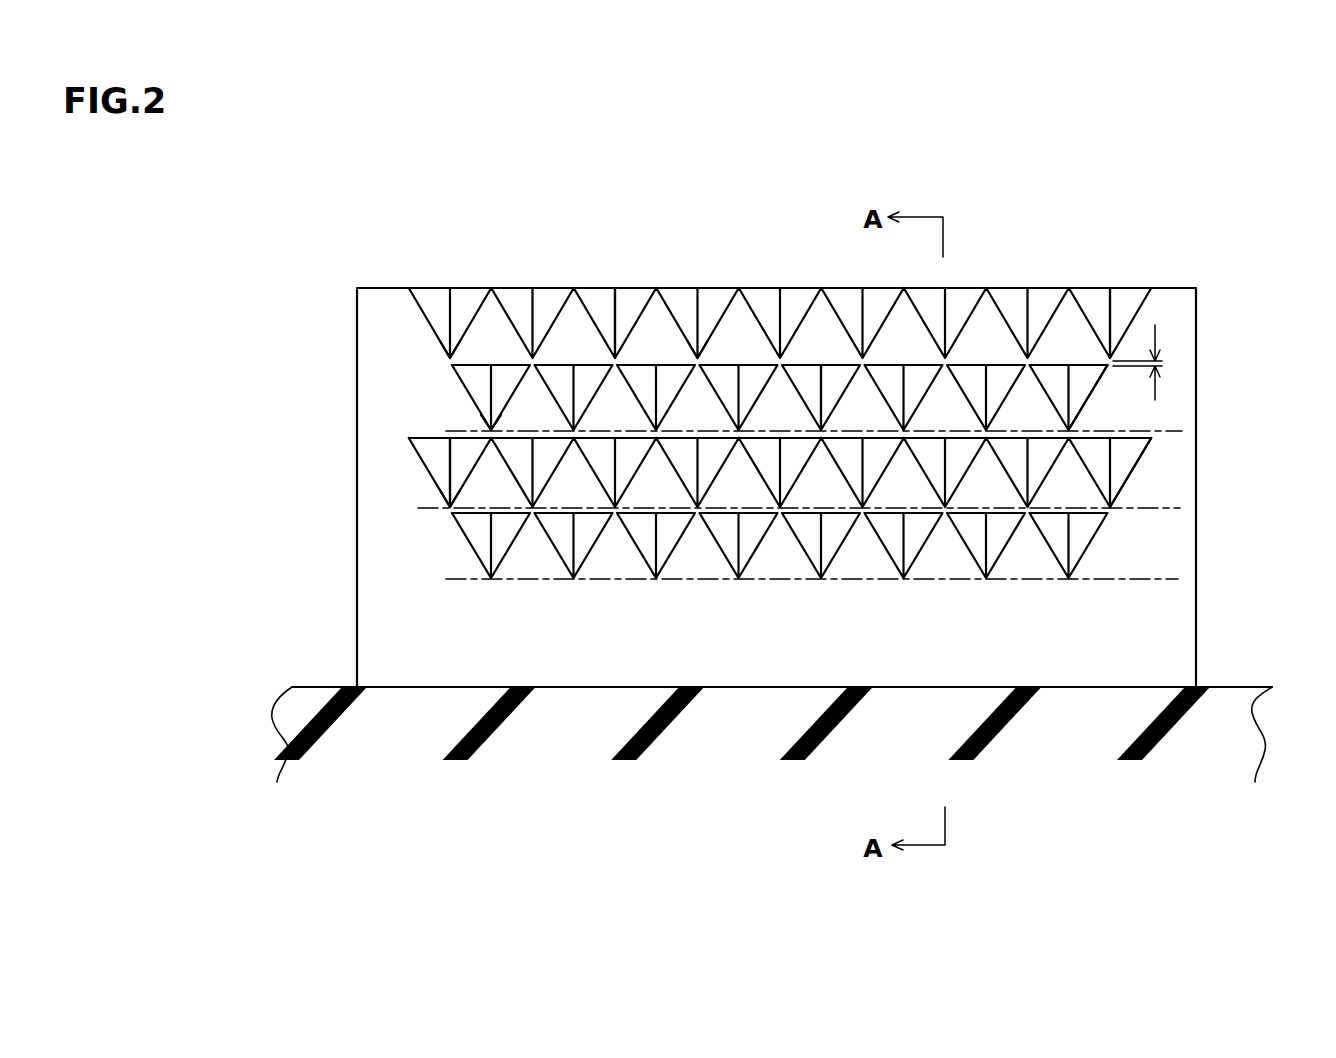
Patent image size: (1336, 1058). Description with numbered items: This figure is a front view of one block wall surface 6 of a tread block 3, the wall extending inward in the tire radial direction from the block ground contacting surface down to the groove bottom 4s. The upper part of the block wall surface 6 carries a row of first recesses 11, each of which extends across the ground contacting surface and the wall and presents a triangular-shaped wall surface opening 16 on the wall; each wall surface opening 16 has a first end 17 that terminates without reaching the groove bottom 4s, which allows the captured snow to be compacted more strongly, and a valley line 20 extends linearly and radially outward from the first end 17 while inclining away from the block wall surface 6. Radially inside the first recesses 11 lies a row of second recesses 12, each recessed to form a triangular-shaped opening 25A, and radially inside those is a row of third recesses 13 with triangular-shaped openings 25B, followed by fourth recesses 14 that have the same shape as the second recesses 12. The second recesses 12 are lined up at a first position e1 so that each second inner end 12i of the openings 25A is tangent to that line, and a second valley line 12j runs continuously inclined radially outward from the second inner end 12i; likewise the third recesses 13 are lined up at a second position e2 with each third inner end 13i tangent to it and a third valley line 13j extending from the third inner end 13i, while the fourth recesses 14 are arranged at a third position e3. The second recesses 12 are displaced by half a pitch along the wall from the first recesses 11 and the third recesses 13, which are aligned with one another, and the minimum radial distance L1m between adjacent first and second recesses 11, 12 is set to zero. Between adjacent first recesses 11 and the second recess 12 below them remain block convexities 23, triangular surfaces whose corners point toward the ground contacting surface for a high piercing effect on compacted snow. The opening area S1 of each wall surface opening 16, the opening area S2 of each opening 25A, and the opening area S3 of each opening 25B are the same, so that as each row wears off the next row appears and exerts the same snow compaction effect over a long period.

The block 3 is at (1240, 276).
The groove bottom 4s is at (1235, 687).
The block wall surface 6 is at (390, 543).
The first recess 11 is at (432, 303).
The second recess 12 is at (1143, 417).
The second inner end 12i is at (490, 431).
The second valley line 12j is at (820, 398).
The third recess 13 is at (393, 481).
The third inner end 13i is at (450, 507).
The third valley line 13j is at (450, 475).
The fourth recess 14 is at (1135, 552).
The wall surface opening 16 is at (585, 277).
The first end 17 is at (698, 358).
The valley line 20 is at (615, 323).
The block convexity 23 is at (487, 340).
The opening of second recess 25A is at (1097, 388).
The opening of third recess 25B is at (1133, 473).
The opening area of wall surface opening S1 is at (958, 303).
The opening area of second recess opening S2 is at (1000, 380).
The opening area of third recess opening S3 is at (1017, 468).
The first position e1 is at (1160, 433).
The second position e2 is at (1153, 508).
The third position e3 is at (1077, 580).
The minimum distance L1m is at (1157, 372).